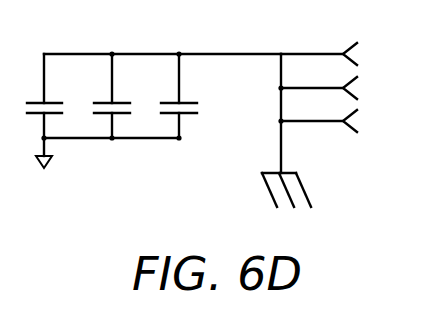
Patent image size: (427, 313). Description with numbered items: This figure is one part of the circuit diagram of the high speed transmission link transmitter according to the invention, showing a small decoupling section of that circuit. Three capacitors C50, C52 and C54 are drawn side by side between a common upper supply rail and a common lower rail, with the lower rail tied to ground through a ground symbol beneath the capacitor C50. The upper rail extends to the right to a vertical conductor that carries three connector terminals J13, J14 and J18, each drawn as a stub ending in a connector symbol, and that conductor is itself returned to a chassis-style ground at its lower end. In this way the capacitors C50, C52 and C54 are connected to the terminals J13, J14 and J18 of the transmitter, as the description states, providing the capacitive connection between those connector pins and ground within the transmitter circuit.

The capacitor C50 is at (56, 96).
The capacitor C52 is at (122, 96).
The capacitor C54 is at (188, 96).
The connector terminal J13 is at (334, 54).
The connector terminal J14 is at (334, 88).
The connector terminal J18 is at (334, 121).